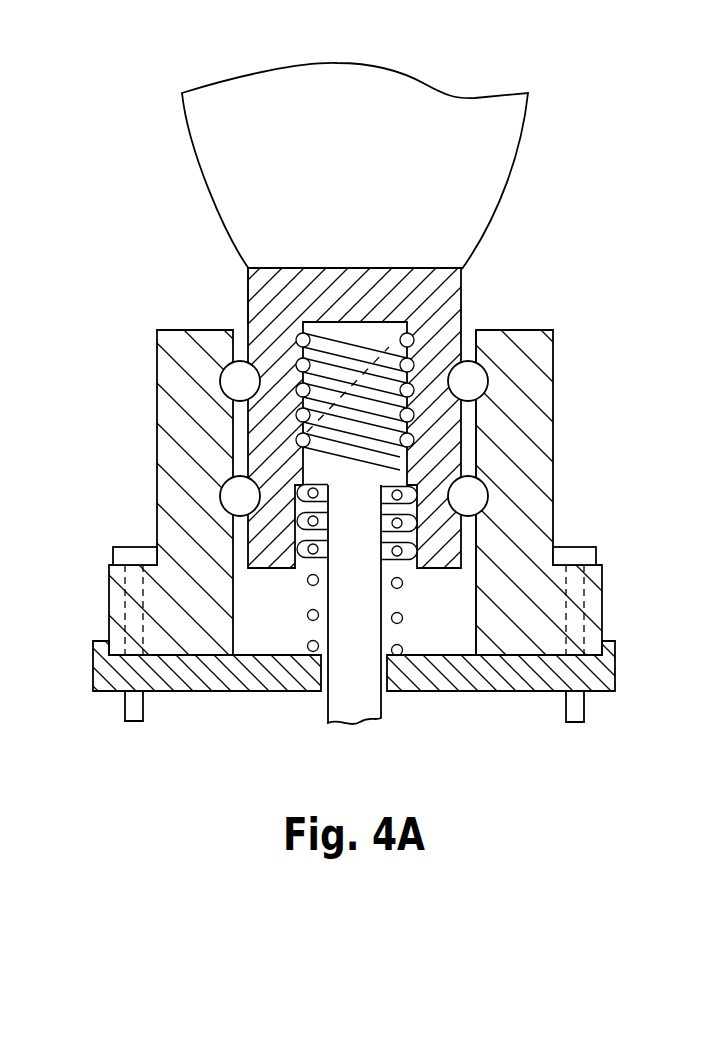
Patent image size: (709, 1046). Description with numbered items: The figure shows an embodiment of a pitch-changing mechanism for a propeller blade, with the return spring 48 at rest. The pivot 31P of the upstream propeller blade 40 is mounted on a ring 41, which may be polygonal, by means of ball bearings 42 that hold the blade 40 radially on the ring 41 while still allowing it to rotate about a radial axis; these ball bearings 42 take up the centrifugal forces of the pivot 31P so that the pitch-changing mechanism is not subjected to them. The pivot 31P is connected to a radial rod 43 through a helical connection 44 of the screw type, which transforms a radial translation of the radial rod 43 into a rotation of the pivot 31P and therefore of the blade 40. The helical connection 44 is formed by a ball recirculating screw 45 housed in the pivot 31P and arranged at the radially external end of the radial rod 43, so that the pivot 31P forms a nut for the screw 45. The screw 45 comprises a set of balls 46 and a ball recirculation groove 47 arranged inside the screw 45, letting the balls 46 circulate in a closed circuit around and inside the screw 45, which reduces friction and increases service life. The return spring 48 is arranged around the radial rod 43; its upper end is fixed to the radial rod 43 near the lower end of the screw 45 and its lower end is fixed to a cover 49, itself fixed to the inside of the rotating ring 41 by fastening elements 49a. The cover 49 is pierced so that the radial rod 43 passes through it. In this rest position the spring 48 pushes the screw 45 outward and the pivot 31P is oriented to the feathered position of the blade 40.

The pivot 31P is at (433, 300).
The blade 40 is at (527, 122).
The ring 41 is at (535, 462).
The ball bearings 42 is at (240, 381).
The radial rod 43 is at (368, 705).
The helical connection 44 is at (508, 434).
The ball recirculating screw 45 is at (285, 348).
The set of balls 46 is at (400, 340).
The ball recirculation groove 47 is at (312, 433).
The return spring 48 is at (303, 617).
The cover 49 is at (607, 672).
The fastening elements 49a is at (577, 553).